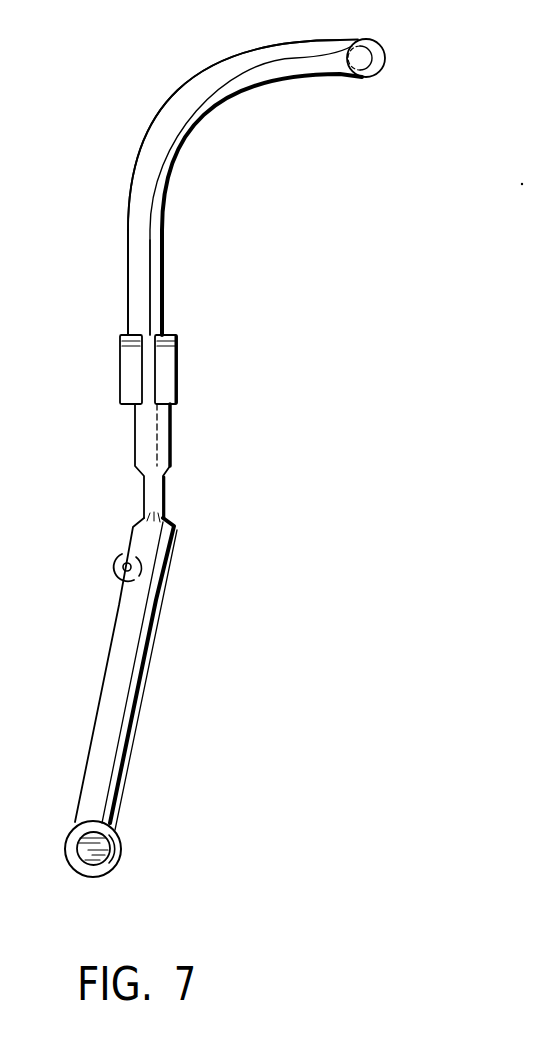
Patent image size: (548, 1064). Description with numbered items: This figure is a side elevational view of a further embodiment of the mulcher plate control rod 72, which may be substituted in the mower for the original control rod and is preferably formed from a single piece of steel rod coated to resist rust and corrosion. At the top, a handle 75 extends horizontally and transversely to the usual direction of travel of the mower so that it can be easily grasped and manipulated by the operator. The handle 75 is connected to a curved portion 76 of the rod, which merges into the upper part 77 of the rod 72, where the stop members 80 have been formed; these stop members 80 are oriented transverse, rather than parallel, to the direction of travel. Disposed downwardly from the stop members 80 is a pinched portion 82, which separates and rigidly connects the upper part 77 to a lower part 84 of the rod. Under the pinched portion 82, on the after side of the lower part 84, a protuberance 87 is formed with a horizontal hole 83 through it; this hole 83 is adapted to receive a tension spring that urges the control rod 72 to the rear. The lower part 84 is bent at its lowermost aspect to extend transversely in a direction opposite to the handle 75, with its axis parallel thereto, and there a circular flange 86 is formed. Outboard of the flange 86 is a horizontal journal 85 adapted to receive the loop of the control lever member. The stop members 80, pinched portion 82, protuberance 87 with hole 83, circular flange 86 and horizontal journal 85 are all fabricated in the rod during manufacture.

The control rod 72 is at (163, 218).
The handle 75 is at (386, 53).
The curved portion 76 is at (161, 114).
The upper part 77 is at (128, 282).
The stop members 80 is at (120, 372).
The pinched portion 82 is at (164, 488).
The hole 83 is at (124, 564).
The lower part 84 is at (153, 645).
The horizontal journal 85 is at (104, 872).
The circular flange 86 is at (119, 841).
The protuberance 87 is at (111, 580).